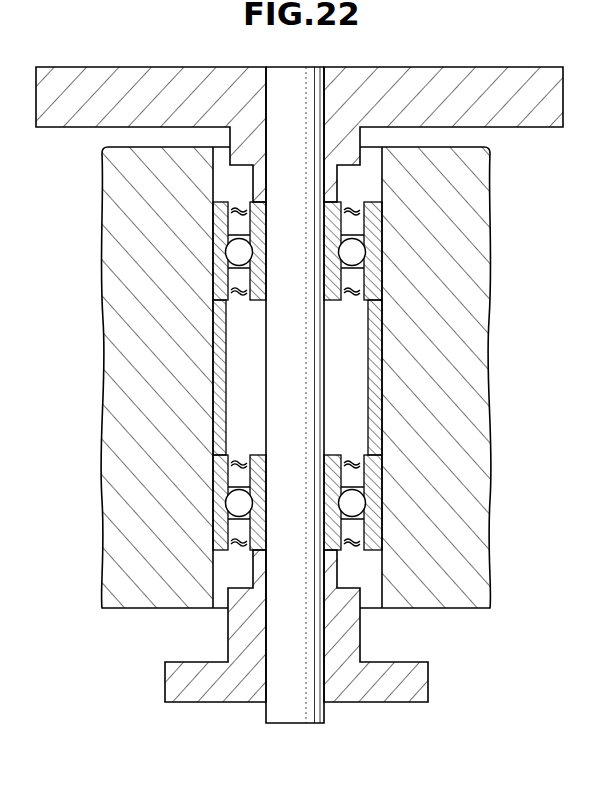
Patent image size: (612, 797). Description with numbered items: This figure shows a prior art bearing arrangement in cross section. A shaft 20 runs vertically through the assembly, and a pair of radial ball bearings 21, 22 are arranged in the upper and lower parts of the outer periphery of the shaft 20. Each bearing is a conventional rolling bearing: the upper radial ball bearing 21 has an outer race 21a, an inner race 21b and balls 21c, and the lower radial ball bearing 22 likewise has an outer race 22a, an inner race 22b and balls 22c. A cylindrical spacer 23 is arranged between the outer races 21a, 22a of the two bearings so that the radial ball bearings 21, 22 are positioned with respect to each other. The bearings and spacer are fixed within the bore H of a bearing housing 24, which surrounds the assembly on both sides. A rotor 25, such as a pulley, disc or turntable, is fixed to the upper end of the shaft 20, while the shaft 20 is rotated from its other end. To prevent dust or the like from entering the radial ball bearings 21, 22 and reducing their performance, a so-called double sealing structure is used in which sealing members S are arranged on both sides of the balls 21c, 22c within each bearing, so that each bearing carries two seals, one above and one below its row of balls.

The shaft 20 is at (272, 358).
The radial ball bearing 21 is at (342, 251).
The outer race 21a is at (370, 275).
The inner race of first bearing 21b is at (362, 228).
The balls 21c is at (365, 250).
The radial ball bearing 22 is at (344, 502).
The outer race 22a is at (380, 530).
The inner race of second bearing 22b is at (335, 478).
The balls 22c is at (370, 507).
The cylindrical spacer 23 is at (372, 385).
The bearing housing 24 is at (483, 355).
The rotor 25 is at (443, 68).
The sealing members S is at (355, 208).
The bore H is at (367, 585).